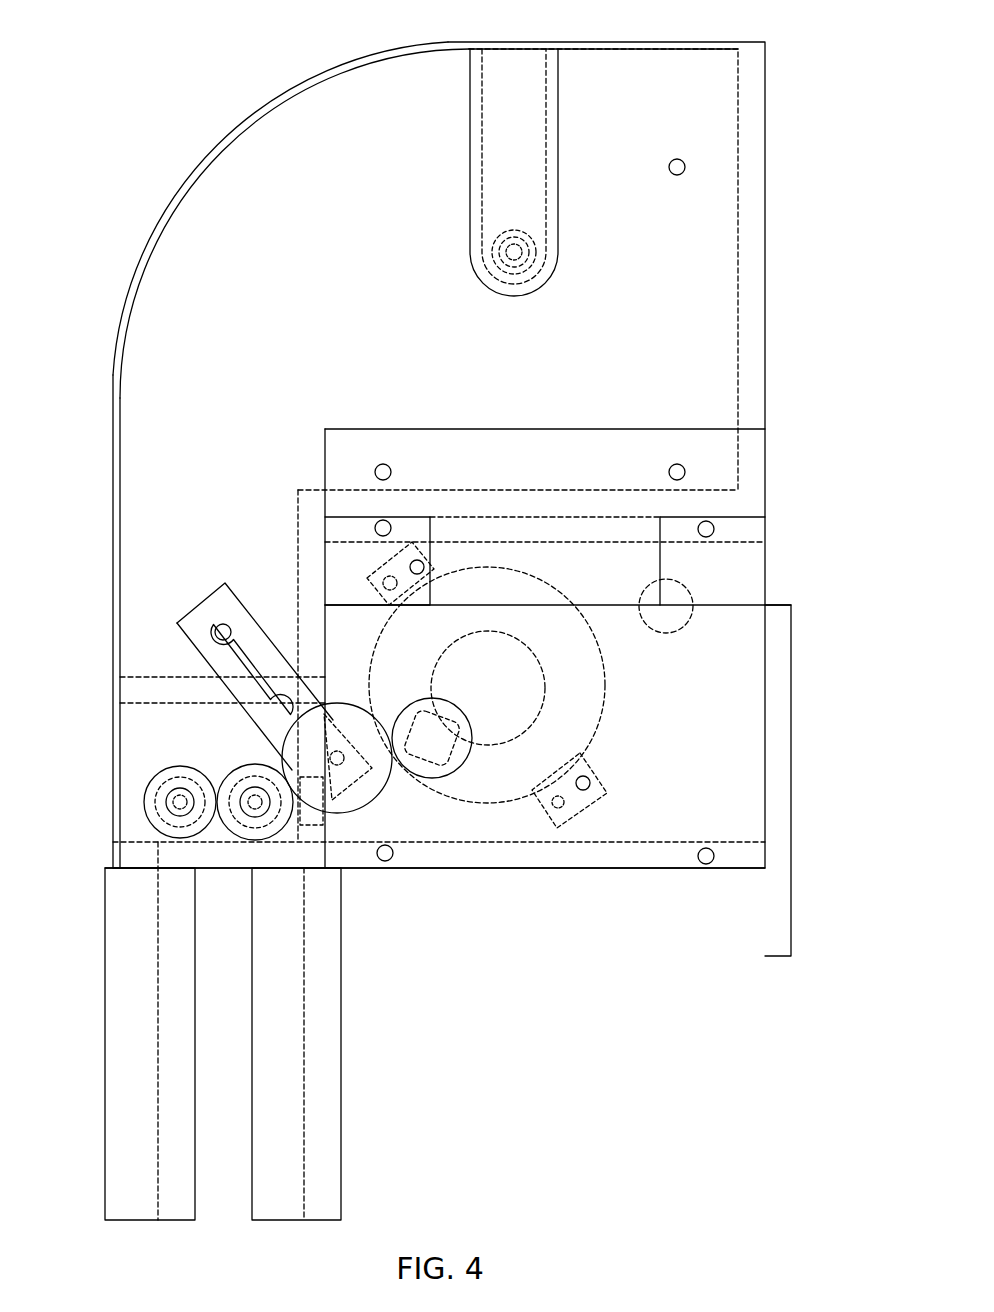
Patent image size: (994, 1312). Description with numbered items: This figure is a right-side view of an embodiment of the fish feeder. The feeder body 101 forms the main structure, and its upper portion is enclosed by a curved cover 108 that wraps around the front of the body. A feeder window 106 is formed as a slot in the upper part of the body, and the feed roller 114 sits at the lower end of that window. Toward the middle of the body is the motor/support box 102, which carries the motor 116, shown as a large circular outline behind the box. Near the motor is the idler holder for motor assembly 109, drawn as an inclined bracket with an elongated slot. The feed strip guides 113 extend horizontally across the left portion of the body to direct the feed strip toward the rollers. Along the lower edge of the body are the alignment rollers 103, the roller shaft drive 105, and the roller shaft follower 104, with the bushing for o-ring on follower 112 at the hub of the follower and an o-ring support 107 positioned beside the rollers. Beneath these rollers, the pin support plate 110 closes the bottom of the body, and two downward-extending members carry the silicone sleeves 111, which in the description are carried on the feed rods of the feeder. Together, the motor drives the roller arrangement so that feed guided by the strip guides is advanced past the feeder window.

The feeder body 101 is at (768, 300).
The motor/support box 102 is at (327, 648).
The alignment rollers 103 is at (172, 820).
The roller shaft follower 104 is at (300, 837).
The roller shaft drive 105 is at (148, 786).
The feeder window 106 is at (558, 160).
The o-ring support 107 is at (320, 823).
The cover 108 is at (205, 160).
The idler holder for motor assembly 109 is at (195, 607).
The pin support plate 110 is at (212, 863).
The silicone sleeves 111 is at (195, 1102).
The bushing for o-ring on follower 112 is at (153, 812).
The feed strip guides 113 is at (158, 678).
The feed roller 114 is at (536, 252).
The motor 116 is at (602, 663).